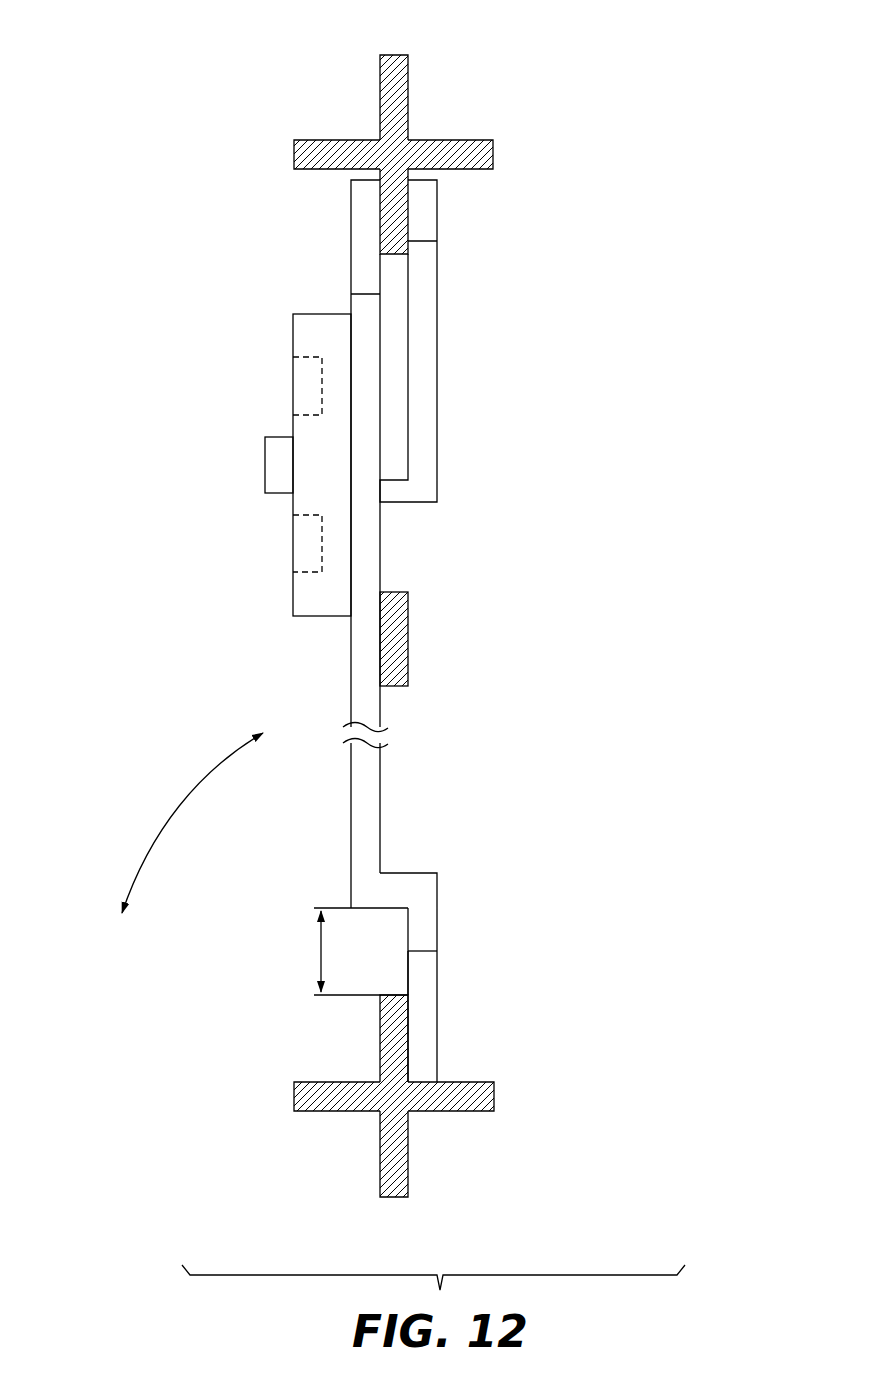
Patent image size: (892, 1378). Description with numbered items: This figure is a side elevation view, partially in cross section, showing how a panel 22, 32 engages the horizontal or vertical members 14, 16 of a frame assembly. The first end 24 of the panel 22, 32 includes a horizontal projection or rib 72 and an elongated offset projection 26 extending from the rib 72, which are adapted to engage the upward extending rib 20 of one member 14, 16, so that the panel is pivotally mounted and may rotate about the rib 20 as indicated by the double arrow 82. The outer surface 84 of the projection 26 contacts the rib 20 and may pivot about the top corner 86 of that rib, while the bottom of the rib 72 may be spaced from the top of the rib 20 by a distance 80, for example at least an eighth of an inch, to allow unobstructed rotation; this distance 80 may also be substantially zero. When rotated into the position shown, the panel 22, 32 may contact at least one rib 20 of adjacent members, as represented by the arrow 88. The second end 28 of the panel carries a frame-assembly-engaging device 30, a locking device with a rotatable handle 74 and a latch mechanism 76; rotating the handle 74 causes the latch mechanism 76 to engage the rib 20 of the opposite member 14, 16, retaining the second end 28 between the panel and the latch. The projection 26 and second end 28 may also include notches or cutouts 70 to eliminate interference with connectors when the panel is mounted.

The horizontal member 14 is at (355, 601).
The vertical member 16 is at (393, 67).
The rib 20 is at (390, 89).
The panel 22 is at (445, 581).
The first end 24 is at (163, 1092).
The offset projection 26 is at (437, 963).
The second end 28 is at (163, 162).
The frame-assembly-engaging device 30 is at (163, 392).
The panel 32 is at (368, 768).
The notches or cutouts 70 is at (360, 233).
The horizontal projection or rib 72 is at (412, 873).
The rotatable handle 74 is at (300, 343).
The latch mechanism 76 is at (425, 370).
The distance 80 is at (321, 950).
The double arrow 82 is at (180, 800).
The outer surface 84 is at (408, 960).
The top corner 86 is at (408, 995).
The arrow 88 is at (420, 597).